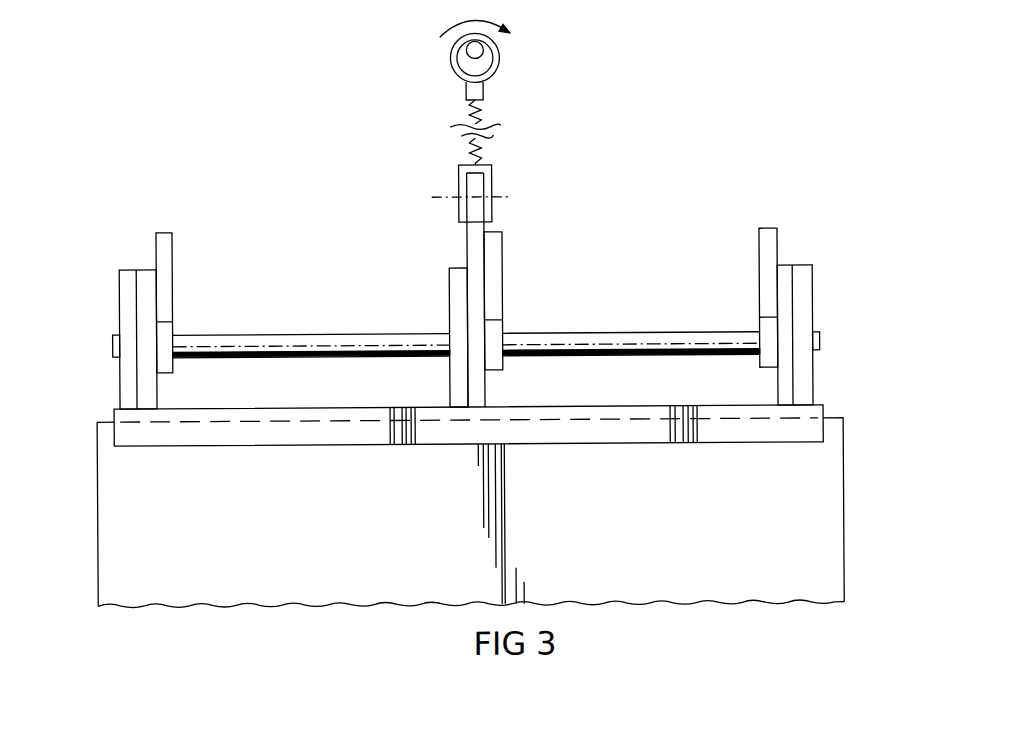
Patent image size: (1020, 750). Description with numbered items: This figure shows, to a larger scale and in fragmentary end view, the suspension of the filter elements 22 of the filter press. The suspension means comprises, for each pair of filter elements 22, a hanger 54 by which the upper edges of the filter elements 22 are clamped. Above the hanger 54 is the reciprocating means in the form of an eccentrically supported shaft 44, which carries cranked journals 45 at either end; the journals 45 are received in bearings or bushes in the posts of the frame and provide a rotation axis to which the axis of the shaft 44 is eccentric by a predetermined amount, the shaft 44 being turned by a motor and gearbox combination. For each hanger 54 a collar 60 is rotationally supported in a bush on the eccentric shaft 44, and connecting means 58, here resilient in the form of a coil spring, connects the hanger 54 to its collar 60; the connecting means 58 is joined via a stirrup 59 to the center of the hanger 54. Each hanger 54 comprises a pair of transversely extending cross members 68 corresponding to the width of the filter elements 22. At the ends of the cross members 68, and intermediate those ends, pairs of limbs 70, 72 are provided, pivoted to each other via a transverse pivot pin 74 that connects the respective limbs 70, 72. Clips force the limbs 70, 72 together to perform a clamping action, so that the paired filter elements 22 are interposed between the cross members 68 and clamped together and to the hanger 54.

The filter element 22 is at (509, 602).
The eccentric shaft 44 is at (489, 64).
The cranked journal 45 is at (482, 52).
The hanger 54 is at (149, 228).
The connecting means 58 is at (491, 148).
The stirrup 59 is at (493, 187).
The collar 60 is at (495, 76).
The cross member 68 is at (360, 447).
The limb 70 is at (131, 306).
The limb 72 is at (147, 365).
The transverse pivot pin 74 is at (665, 342).